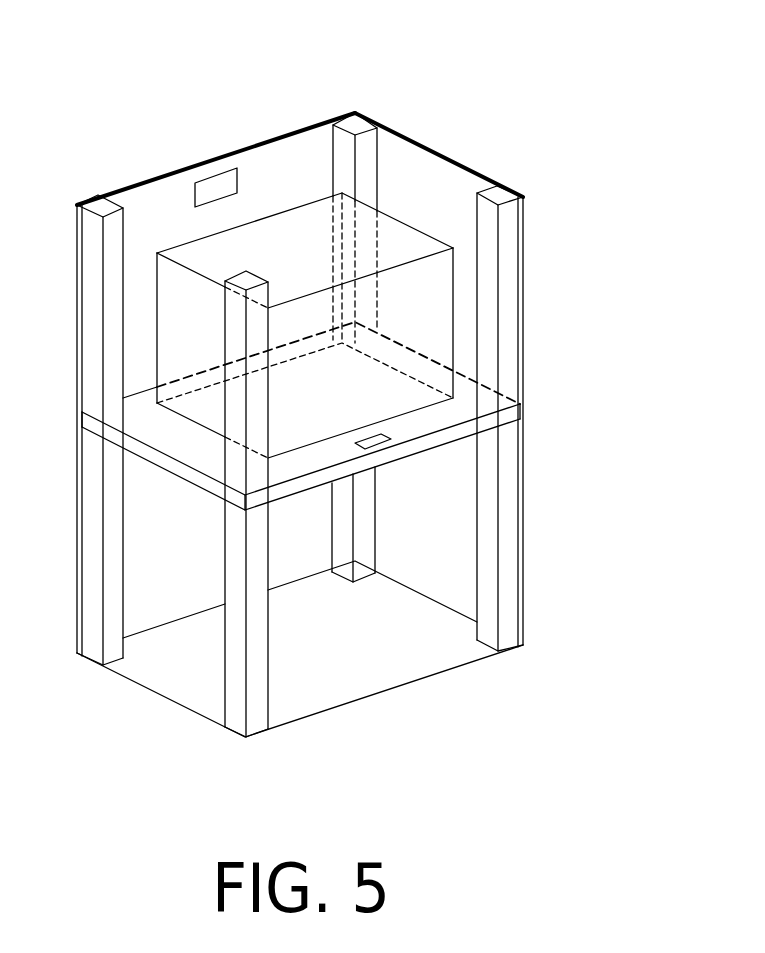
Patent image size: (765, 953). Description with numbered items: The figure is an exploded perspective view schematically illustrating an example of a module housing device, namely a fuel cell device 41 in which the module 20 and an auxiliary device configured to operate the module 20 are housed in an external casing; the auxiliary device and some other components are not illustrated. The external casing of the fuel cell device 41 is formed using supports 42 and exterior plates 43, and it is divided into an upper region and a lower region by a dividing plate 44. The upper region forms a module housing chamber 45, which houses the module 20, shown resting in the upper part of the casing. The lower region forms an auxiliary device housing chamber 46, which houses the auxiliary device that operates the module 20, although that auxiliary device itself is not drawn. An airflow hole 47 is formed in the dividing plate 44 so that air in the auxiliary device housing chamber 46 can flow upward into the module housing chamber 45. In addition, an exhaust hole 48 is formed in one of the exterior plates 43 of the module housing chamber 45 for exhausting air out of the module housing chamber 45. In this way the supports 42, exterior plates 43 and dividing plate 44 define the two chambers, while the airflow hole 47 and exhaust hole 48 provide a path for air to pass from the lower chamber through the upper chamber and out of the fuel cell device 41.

The fuel cell device 41 is at (251, 74).
The support 42 is at (100, 200).
The exterior plate 43 is at (392, 133).
The dividing plate 44 is at (520, 408).
The module housing chamber 45 is at (412, 180).
The auxiliary device housing chamber 46 is at (160, 548).
The airflow hole 47 is at (383, 437).
The exhaust hole 48 is at (210, 187).
The module 20 is at (402, 238).